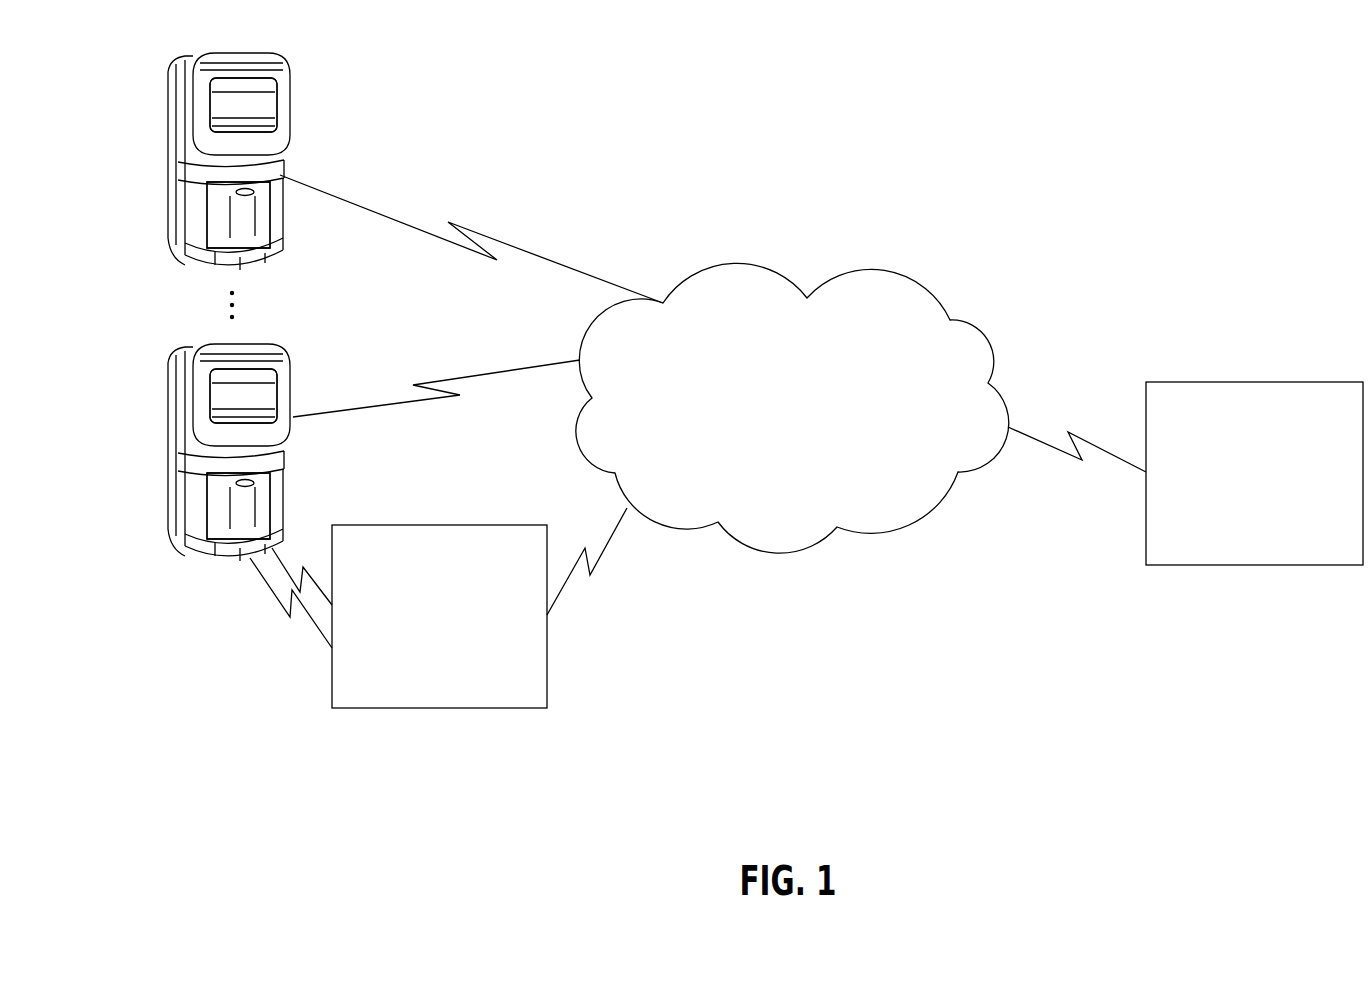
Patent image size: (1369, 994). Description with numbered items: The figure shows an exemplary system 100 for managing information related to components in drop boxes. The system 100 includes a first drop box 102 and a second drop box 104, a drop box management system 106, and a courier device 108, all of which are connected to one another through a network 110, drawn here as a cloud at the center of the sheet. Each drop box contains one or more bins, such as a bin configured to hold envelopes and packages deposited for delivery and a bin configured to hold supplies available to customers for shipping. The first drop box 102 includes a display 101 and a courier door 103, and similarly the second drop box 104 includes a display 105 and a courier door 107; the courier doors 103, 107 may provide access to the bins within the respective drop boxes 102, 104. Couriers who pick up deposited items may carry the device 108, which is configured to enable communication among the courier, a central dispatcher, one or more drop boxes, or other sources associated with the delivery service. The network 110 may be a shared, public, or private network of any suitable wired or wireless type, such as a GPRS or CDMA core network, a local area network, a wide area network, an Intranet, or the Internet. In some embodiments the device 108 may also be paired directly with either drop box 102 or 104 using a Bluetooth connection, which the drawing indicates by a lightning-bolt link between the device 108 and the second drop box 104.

The system 100 is at (1065, 88).
The display 101 is at (210, 100).
The drop box 102 is at (288, 108).
The courier door 103 is at (233, 227).
The drop box 104 is at (287, 382).
The display 105 is at (210, 390).
The drop box management system 106 is at (1255, 380).
The courier door 107 is at (223, 527).
The courier device 108 is at (440, 523).
The network 110 is at (792, 408).